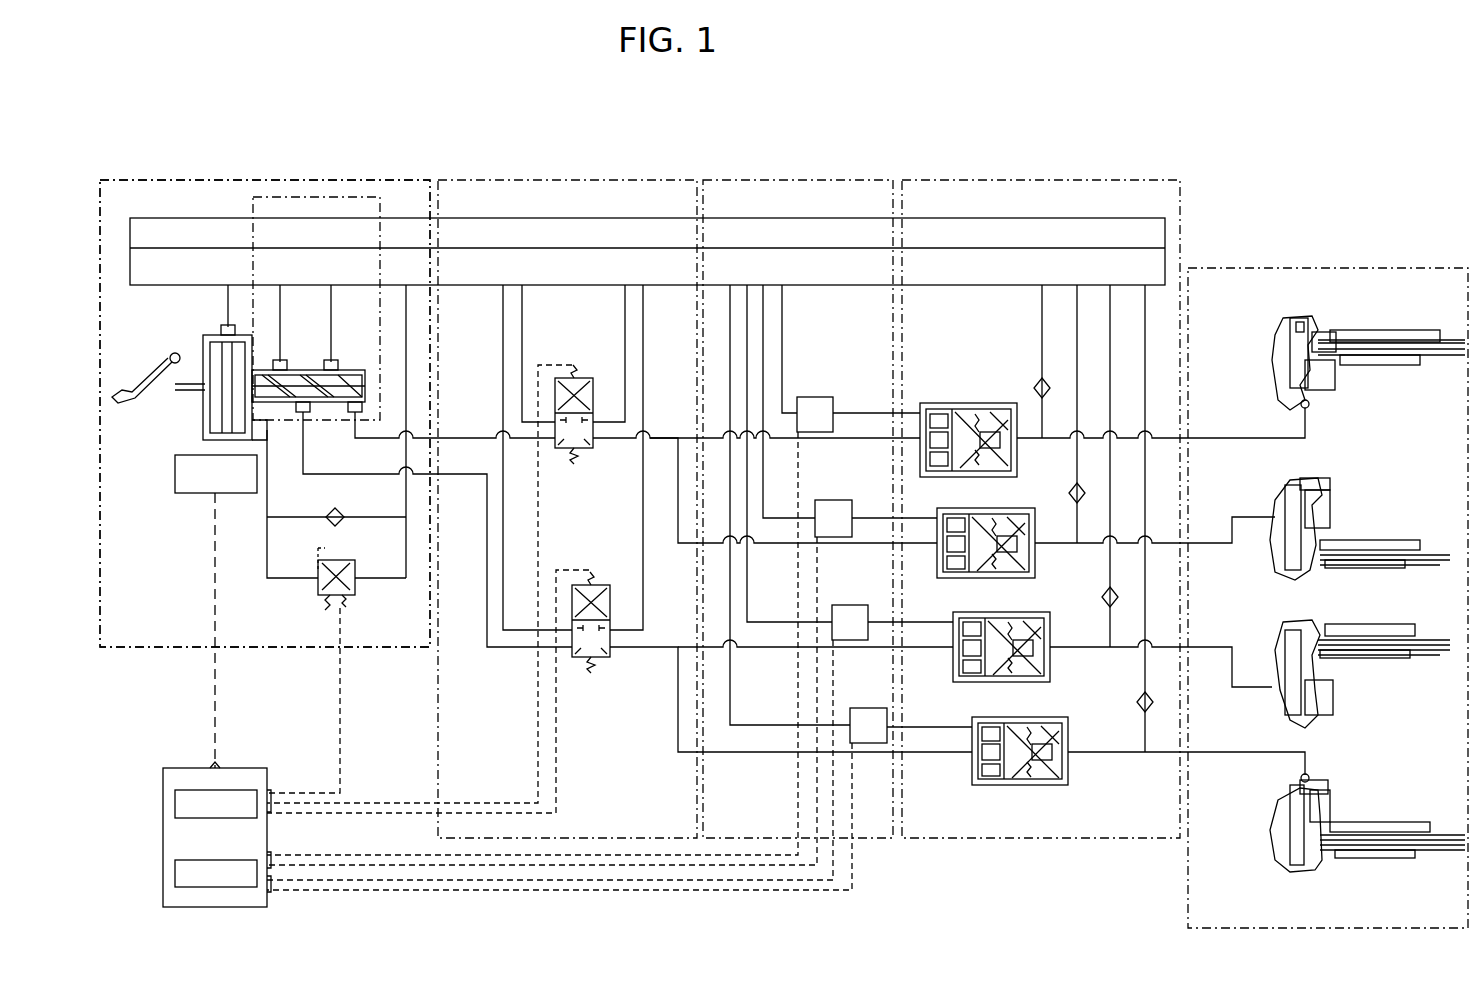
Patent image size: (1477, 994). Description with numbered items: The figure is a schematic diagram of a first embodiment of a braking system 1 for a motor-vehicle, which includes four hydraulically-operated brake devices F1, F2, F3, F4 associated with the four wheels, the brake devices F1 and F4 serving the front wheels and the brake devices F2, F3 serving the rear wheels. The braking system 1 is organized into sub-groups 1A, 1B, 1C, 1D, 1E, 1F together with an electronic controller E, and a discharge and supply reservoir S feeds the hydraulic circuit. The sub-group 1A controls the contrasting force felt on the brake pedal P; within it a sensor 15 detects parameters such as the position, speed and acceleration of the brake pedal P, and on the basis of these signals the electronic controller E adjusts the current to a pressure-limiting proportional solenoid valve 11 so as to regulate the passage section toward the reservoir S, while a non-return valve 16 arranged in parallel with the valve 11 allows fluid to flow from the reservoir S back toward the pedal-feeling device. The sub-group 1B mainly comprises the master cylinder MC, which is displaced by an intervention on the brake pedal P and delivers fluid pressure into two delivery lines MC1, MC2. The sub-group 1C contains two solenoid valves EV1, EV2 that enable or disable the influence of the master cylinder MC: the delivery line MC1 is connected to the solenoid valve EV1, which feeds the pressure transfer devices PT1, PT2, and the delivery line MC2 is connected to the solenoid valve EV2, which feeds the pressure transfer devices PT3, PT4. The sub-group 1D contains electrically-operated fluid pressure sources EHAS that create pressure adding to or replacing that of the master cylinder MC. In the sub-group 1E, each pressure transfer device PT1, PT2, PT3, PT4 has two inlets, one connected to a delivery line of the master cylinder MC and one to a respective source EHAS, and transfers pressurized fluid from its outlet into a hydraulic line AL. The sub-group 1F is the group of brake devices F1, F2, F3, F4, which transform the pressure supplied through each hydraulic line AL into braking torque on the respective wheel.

The braking system 1 is at (1288, 168).
The sub-group 1A is at (195, 178).
The sub-group 1B is at (323, 195).
The sub-group 1C is at (538, 178).
The sub-group 1D is at (788, 178).
The sub-group 1E is at (1062, 178).
The sub-group 1F is at (1367, 266).
The discharge and supply reservoir S is at (1132, 215).
The brake pedal P is at (113, 405).
The master cylinder MC is at (302, 365).
The delivery line MC1 is at (480, 435).
The delivery line MC2 is at (500, 648).
The solenoid valve EV1 is at (590, 371).
The solenoid valve EV2 is at (599, 579).
The electrically-operated fluid pressure source EHAS is at (840, 390).
The pressure transfer device PT1 is at (963, 398).
The pressure transfer device PT2 is at (1047, 521).
The pressure transfer device PT3 is at (1080, 595).
The pressure transfer device PT4 is at (1026, 792).
The hydraulic line AL is at (1290, 436).
The brake device F1 is at (1268, 352).
The brake device F2 is at (1275, 500).
The brake device F3 is at (1265, 648).
The brake device F4 is at (1265, 812).
The electronic controller E is at (158, 805).
The sensor 15 is at (185, 492).
The non-return valve 16 is at (341, 502).
The pressure-limiting proportional solenoid valve 11 is at (312, 595).